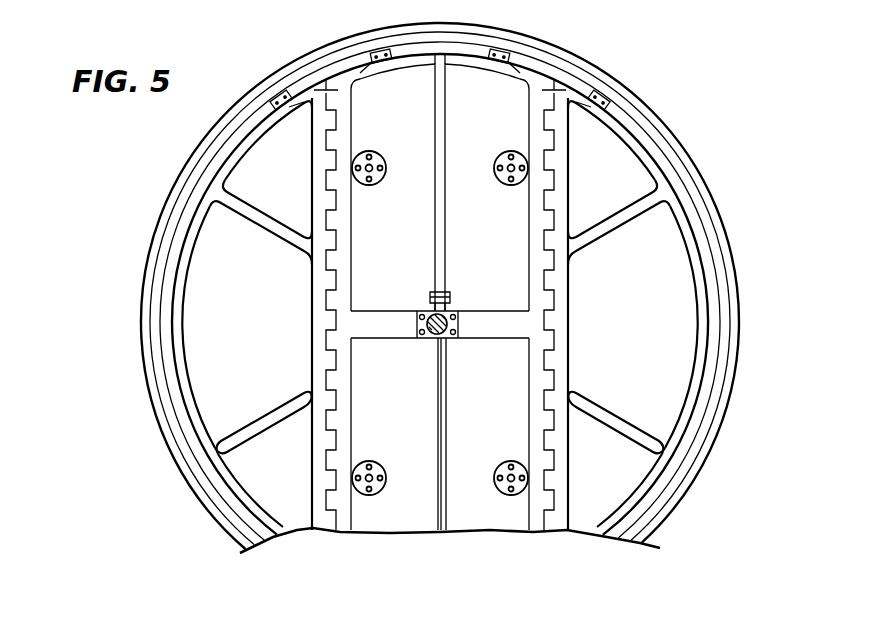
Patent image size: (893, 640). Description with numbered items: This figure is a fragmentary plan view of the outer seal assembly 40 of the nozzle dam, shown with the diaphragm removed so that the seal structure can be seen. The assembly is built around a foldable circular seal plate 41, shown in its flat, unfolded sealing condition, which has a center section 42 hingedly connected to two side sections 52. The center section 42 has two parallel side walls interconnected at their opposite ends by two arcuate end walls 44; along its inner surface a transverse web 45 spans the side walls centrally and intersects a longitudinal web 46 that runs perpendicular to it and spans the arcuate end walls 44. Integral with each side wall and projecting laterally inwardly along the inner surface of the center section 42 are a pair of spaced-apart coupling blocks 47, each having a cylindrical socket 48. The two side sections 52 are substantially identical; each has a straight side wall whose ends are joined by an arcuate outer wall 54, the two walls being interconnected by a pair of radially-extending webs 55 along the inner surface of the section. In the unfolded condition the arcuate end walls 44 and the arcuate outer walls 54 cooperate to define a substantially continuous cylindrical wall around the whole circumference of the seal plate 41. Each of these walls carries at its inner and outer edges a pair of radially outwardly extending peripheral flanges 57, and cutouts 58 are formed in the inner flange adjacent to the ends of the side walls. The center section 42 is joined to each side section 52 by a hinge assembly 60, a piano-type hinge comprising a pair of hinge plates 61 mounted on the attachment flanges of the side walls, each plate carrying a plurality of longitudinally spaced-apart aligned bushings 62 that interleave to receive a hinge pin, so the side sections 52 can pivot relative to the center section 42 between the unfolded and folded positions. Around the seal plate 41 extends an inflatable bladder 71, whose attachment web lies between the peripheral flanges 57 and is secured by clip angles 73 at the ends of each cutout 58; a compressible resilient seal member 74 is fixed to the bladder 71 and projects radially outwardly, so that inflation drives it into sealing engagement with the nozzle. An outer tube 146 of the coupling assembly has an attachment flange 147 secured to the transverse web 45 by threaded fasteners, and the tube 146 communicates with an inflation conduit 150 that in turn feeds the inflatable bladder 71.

The outer seal assembly 40 is at (752, 82).
The foldable circular seal plate 41 is at (672, 267).
The center section 42 is at (406, 518).
The arcuate end walls 44 is at (466, 62).
The transverse web 45 is at (487, 330).
The longitudinal web 46 is at (438, 410).
The coupling blocks 47 is at (364, 152).
The cylindrical socket 48 is at (508, 482).
The side sections 52 is at (205, 382).
The arcuate outer wall 54 is at (690, 378).
The radially-extending webs 55 is at (273, 418).
The peripheral flanges 57 is at (660, 172).
The cutouts 58 is at (297, 82).
The hinge assemblies 60 is at (358, 274).
The hinge plates 61 is at (530, 287).
The bushings 62 is at (552, 184).
The inflatable bladder 71 is at (165, 219).
The clip angles 73 is at (380, 50).
The seal member 74 is at (191, 167).
The outer tube 146 is at (432, 340).
The attachment flange 147 is at (418, 320).
The inflation conduit 150 is at (436, 210).